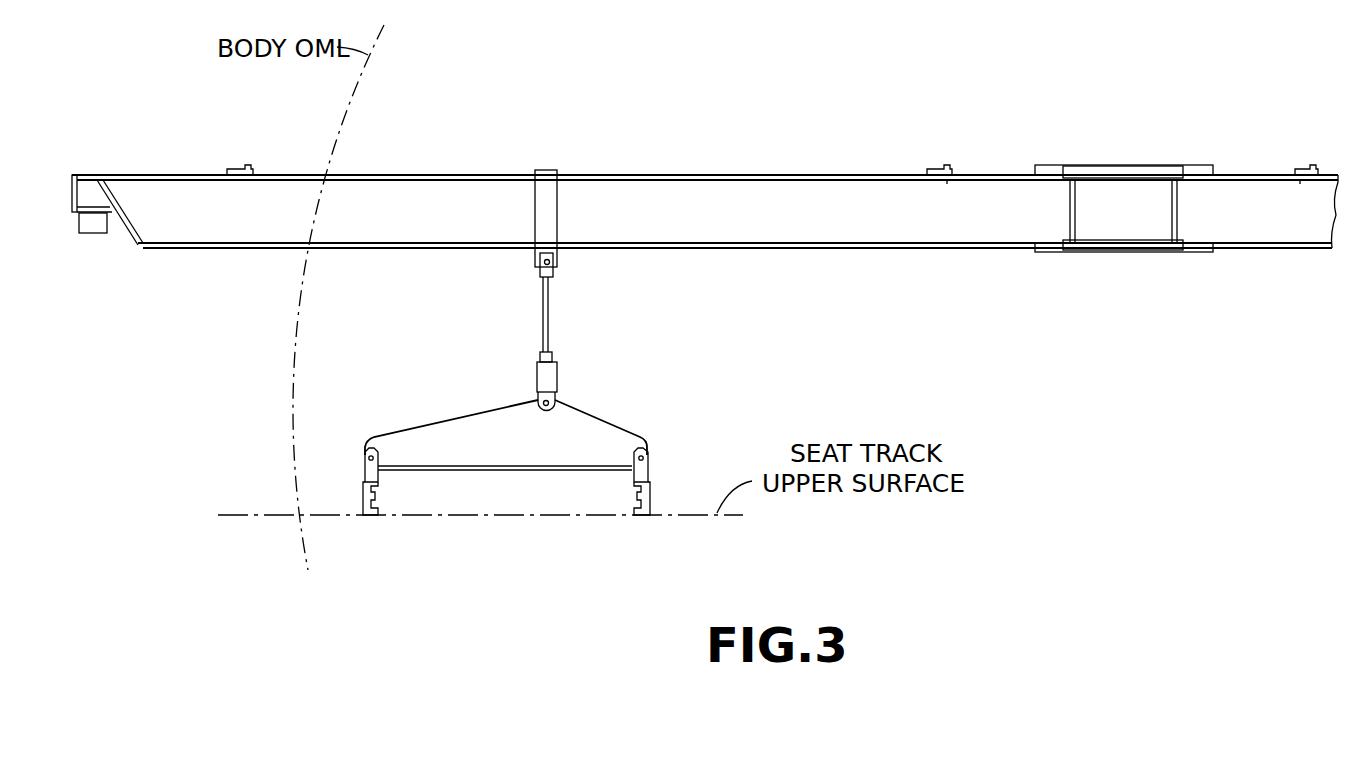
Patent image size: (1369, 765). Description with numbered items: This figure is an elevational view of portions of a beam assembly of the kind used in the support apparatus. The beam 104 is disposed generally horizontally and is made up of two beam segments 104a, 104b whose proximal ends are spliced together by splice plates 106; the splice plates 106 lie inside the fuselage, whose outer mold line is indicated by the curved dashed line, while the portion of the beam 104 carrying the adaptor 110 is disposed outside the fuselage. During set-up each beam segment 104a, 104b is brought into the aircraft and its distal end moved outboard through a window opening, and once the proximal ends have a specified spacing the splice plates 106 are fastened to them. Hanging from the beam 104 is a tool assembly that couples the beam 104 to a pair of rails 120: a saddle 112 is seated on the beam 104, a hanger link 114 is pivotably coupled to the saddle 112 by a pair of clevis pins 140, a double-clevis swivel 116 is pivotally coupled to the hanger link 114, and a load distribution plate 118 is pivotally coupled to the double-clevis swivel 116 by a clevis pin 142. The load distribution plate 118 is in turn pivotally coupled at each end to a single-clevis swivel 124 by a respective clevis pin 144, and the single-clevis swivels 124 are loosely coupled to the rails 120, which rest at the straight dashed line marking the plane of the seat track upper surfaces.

The beam 104 is at (905, 123).
The beam segment 104a is at (355, 175).
The beam segment 104b is at (1265, 172).
The splice plates 106 is at (1045, 165).
The adaptor 110 is at (93, 235).
The saddle 112 is at (545, 170).
The hanger link 114 is at (543, 305).
The double-clevis swivel 116 is at (537, 375).
The load distribution plate 118 is at (438, 414).
The rails 120 is at (365, 497).
The single-clevis swivels 124 is at (365, 470).
The clevis pins 140 is at (553, 265).
The clevis pin 142 is at (557, 400).
The clevis pins 144 is at (378, 458).